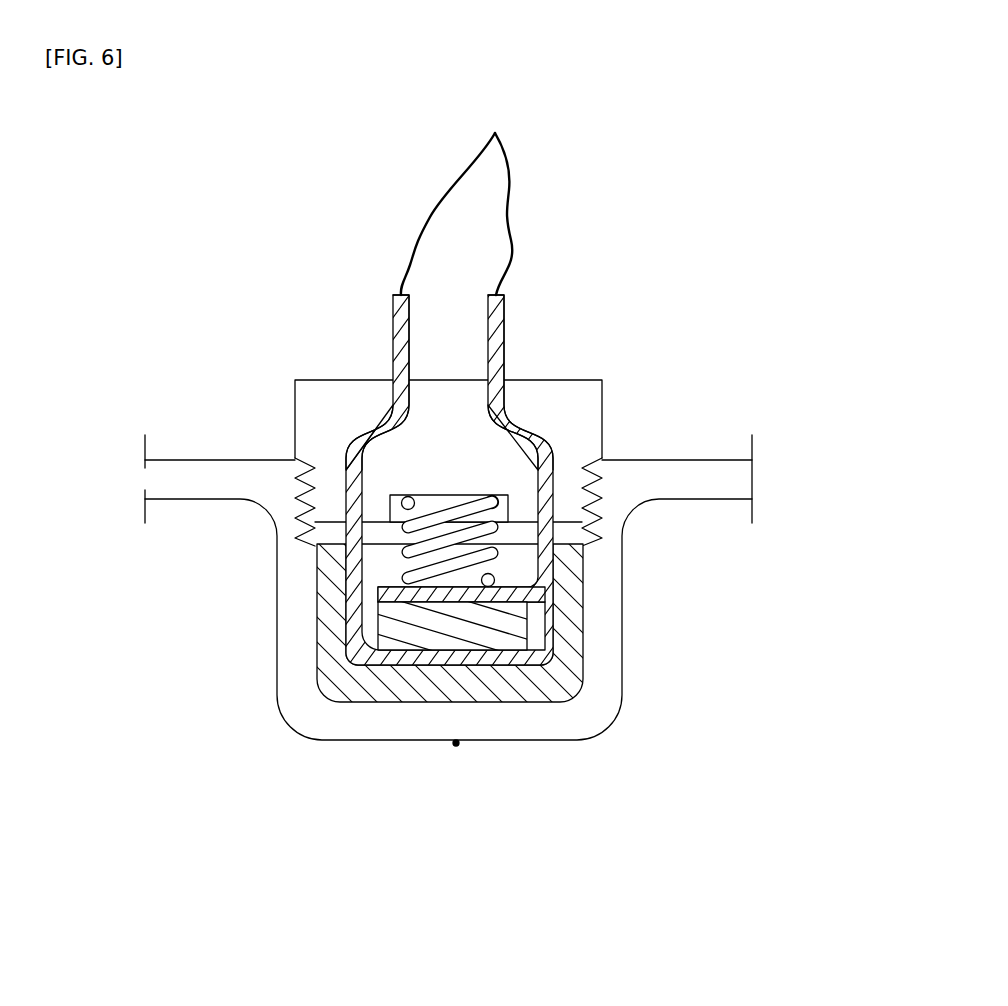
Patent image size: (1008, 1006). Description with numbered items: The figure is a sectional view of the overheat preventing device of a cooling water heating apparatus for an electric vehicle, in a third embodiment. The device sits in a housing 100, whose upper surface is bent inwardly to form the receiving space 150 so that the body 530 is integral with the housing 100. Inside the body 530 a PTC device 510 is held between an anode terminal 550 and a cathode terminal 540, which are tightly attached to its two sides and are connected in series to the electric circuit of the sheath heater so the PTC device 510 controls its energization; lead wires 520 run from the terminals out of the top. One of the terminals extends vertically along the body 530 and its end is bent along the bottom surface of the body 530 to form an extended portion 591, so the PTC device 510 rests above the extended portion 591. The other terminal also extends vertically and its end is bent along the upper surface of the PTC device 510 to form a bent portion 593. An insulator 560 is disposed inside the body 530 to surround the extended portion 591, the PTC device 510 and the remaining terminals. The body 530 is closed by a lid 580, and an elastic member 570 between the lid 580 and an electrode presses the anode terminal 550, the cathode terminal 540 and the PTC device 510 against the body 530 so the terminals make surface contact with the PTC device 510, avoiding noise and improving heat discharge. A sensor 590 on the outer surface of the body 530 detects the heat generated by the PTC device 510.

The housing 100 is at (695, 473).
The receiving space 150 is at (373, 699).
The PTC device 510 is at (505, 628).
The lead wires 520 is at (465, 198).
The body 530 is at (368, 718).
The cathode terminal 540 is at (352, 580).
The anode terminal 550 is at (377, 437).
The insulator 560 is at (567, 640).
The elastic member 570 is at (493, 497).
The lid 580 is at (585, 393).
The sensor 590 is at (456, 746).
The extended portion 591 is at (452, 657).
The bent portion 593 is at (462, 595).